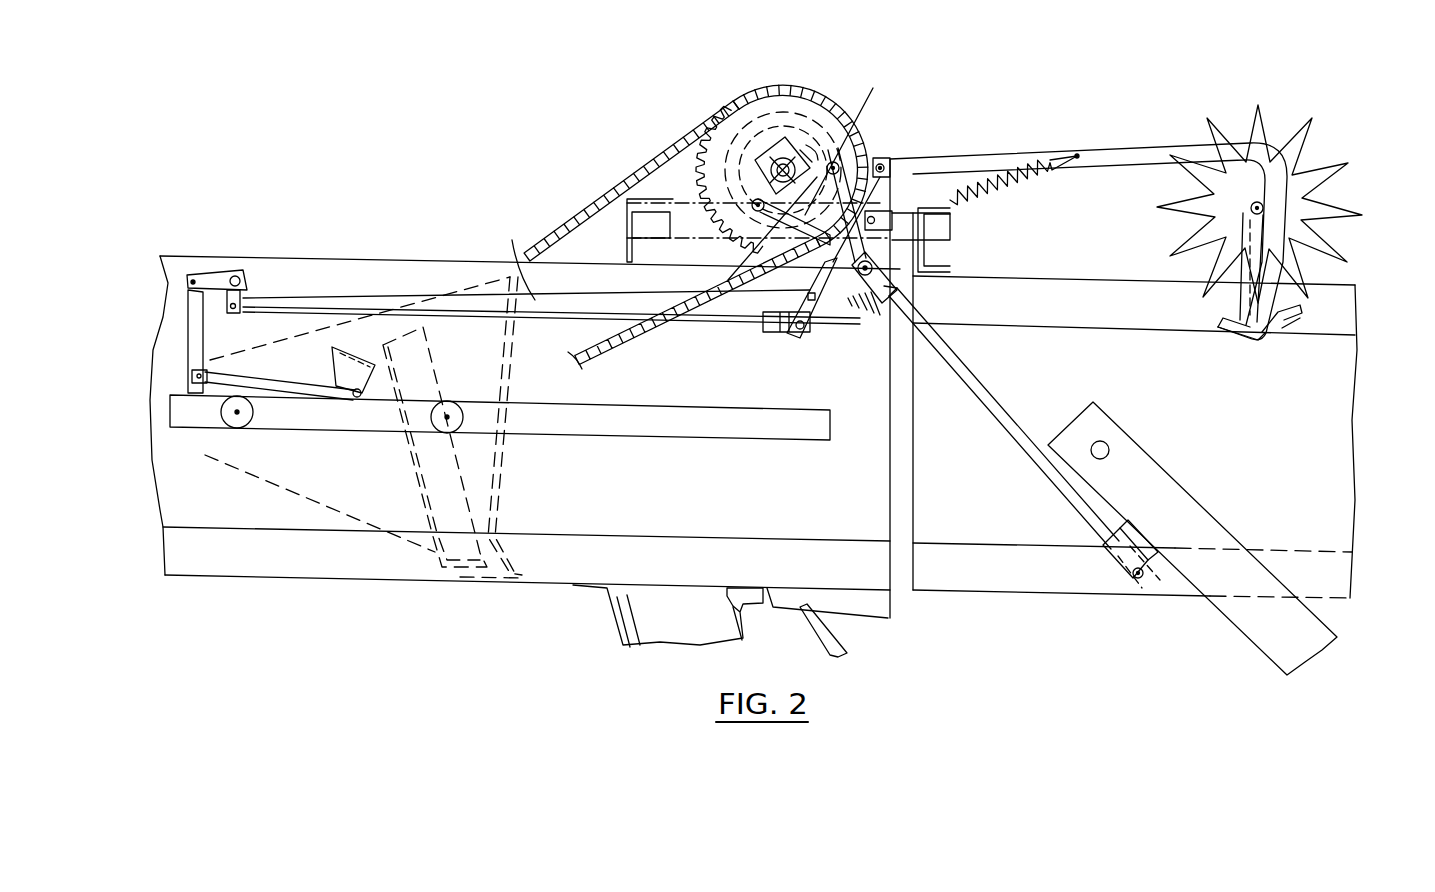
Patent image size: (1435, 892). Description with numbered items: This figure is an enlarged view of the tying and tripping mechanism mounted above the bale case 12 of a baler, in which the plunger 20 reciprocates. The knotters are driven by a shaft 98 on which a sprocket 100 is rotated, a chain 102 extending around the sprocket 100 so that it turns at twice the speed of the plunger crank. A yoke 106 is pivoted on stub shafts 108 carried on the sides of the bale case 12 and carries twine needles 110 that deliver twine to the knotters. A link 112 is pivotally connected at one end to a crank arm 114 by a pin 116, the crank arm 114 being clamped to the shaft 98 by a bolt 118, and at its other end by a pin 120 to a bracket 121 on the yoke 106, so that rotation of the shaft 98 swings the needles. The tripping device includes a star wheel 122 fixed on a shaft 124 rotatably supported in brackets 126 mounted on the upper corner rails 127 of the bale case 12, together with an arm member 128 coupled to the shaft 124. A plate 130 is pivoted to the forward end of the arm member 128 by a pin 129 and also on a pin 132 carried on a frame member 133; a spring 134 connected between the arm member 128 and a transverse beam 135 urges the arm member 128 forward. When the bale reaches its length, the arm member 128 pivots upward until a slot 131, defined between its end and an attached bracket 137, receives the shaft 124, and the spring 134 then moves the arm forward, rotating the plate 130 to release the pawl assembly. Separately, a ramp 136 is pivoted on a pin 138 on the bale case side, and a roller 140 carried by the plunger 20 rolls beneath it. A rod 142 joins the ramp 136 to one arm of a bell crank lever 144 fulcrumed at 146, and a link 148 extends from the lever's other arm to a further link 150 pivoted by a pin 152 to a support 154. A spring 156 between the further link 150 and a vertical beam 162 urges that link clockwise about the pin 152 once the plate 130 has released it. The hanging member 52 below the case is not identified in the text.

The bale case 12 is at (1352, 292).
The plunger 20 is at (497, 467).
The support bracket 52 is at (700, 625).
The shaft 98 is at (795, 152).
The sprocket 100 is at (766, 93).
The chain 102 is at (592, 203).
The yoke 106 is at (1192, 538).
The stub shafts 108 is at (1110, 450).
The twine needles 110 is at (840, 622).
The link 112 is at (993, 405).
The crank arm 114 is at (885, 88).
The pin 116 is at (833, 322).
The bolt 118 is at (790, 158).
The pin 120 is at (1130, 580).
The bracket 121 is at (1162, 592).
The star wheel 122 is at (1325, 200).
The shaft 124 is at (1232, 215).
The brackets 126 is at (1237, 240).
The upper corner rails 127 is at (1322, 325).
The arm member 128 is at (1040, 158).
The pin 129 is at (885, 163).
The plate 130 is at (868, 152).
The slot 131 is at (1250, 320).
The pin 132 is at (965, 216).
The frame member 133 is at (945, 232).
The spring 134 is at (1058, 178).
The transverse beam 135 is at (945, 270).
The ramp 136 is at (195, 385).
The bracket 137 is at (1222, 336).
The pin 138 is at (360, 400).
The roller 140 is at (245, 426).
The rod 142 is at (188, 343).
The bell crank lever 144 is at (210, 278).
The fulcrum 146 is at (240, 275).
The link 148 is at (518, 262).
The further link 150 is at (750, 257).
The pin 152 is at (800, 332).
The support 154 is at (762, 323).
The spring 156 is at (876, 318).
The vertical beam 162 is at (900, 486).